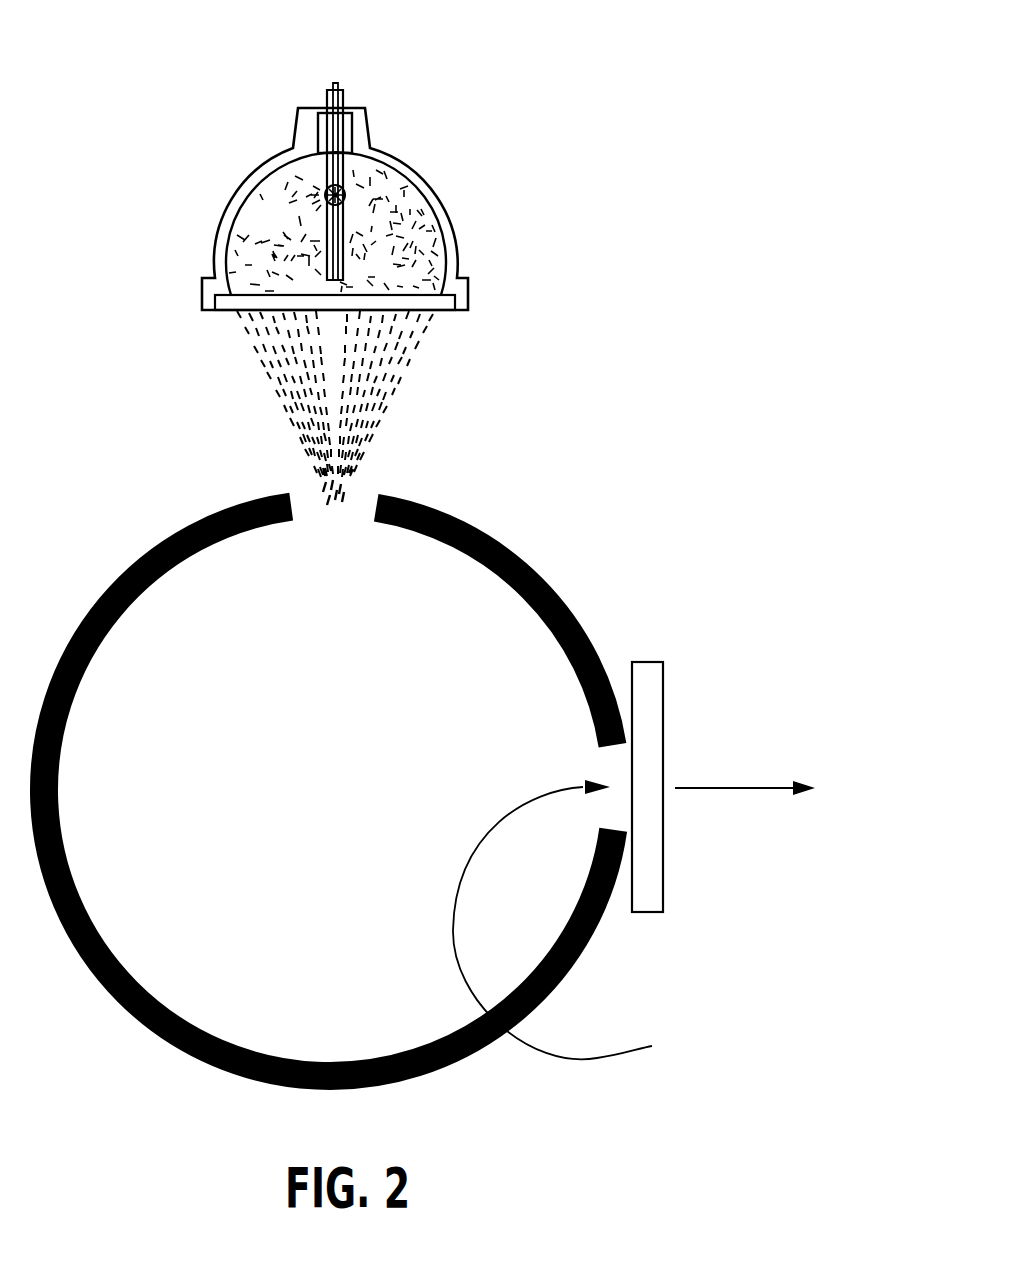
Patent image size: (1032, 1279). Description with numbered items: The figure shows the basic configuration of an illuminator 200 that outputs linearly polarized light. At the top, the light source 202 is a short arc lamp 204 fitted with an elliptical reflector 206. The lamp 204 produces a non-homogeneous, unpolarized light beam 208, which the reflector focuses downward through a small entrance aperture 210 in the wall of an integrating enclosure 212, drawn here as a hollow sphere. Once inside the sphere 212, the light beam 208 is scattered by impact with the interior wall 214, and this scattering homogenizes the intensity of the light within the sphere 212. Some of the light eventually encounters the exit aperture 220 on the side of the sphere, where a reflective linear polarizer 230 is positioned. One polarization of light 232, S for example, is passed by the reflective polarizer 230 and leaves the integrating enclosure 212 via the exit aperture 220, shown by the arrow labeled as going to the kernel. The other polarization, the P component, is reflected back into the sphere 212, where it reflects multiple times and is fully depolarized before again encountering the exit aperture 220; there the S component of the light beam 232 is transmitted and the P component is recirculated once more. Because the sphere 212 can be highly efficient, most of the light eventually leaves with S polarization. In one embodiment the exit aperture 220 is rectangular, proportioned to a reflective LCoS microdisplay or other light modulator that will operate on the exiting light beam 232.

The illuminator 200 is at (420, 159).
The light source 202 is at (417, 188).
The short arc lamp 204 is at (337, 178).
The elliptical reflector 206 is at (457, 263).
The light beam 208 is at (410, 350).
The entrance aperture 210 is at (369, 490).
The integrating enclosure 212 is at (328, 768).
The interior wall 214 is at (62, 847).
The exit aperture 220 is at (578, 919).
The reflective linear polarizer 230 is at (665, 652).
The polarized light beam 232 is at (765, 787).